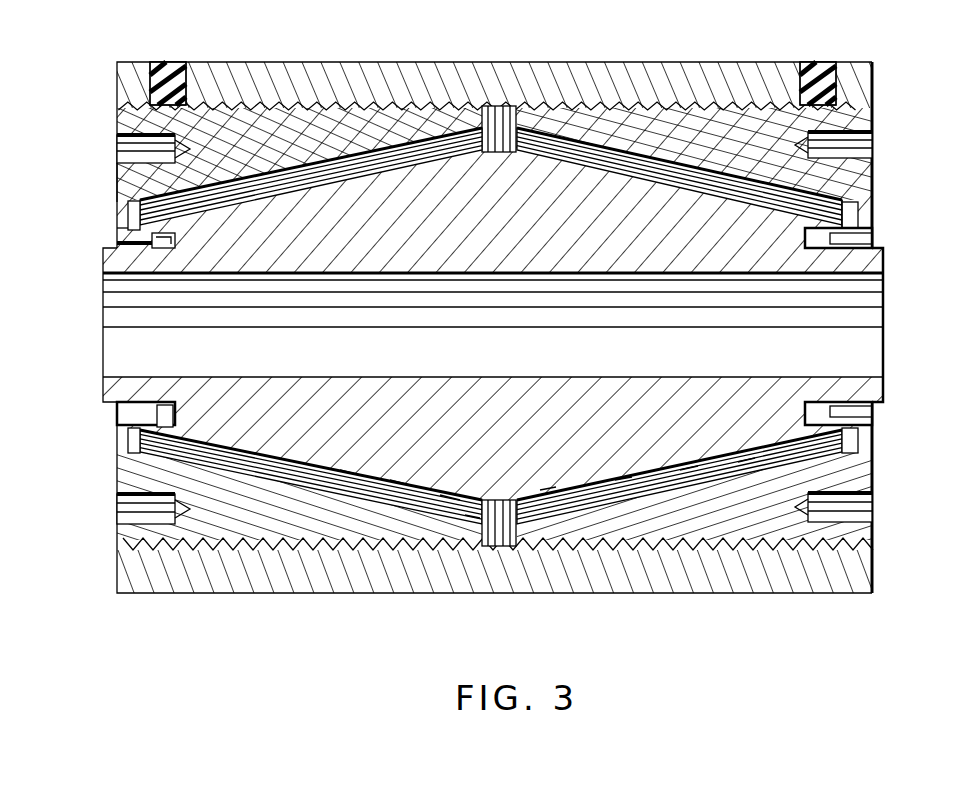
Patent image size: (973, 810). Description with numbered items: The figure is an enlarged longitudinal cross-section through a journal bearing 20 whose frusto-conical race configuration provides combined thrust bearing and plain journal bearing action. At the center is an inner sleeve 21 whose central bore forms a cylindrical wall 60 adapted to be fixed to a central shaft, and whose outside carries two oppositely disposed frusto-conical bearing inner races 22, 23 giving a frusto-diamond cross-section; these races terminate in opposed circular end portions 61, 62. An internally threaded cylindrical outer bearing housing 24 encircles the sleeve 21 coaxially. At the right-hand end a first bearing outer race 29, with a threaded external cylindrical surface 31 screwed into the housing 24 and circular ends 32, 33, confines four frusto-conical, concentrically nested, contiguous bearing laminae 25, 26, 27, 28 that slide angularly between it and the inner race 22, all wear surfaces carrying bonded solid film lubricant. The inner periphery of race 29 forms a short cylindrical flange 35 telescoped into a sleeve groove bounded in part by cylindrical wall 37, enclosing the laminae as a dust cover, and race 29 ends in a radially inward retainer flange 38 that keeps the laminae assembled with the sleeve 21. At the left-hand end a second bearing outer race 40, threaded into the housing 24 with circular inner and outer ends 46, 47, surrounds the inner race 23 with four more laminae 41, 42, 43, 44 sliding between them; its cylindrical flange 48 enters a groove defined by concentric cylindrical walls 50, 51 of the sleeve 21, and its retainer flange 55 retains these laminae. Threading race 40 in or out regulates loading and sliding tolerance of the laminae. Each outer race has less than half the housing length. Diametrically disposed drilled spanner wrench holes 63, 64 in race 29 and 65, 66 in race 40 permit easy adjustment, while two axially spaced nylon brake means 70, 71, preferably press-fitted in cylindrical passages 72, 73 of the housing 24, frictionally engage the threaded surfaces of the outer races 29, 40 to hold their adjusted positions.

The journal bearing 20 is at (597, 62).
The inner sleeve 21 is at (883, 258).
The first bearing inner race 22 is at (855, 440).
The second bearing inner race 23 is at (128, 442).
The outer bearing housing 24 is at (714, 24).
The bearing lamina 25 is at (548, 492).
The bearing lamina 26 is at (624, 485).
The bearing lamina 27 is at (688, 480).
The bearing lamina 28 is at (744, 470).
The first bearing outer race 29 is at (850, 458).
The external cylindrical surface 31 is at (862, 106).
The circular end 32 is at (506, 108).
The circular outer end 33 is at (872, 533).
The cylindrical flange 35 is at (860, 242).
The cylindrical wall 37 is at (836, 232).
The bearing portion retainer flange 38 is at (858, 213).
The second bearing outer race 40 is at (117, 470).
The bearing lamina 41 is at (350, 480).
The bearing lamina 42 is at (400, 490).
The bearing lamina 43 is at (450, 505).
The bearing lamina 44 is at (473, 522).
The circular inner end 46 is at (491, 108).
The circular outer end 47 is at (117, 178).
The cylindrical flange 48 is at (120, 405).
The cylindrical wall 50 is at (110, 249).
The cylindrical wall 51 is at (117, 238).
The bearing portion retainer flange 55 is at (128, 215).
The cylindrical wall 60 is at (858, 274).
The circular end portion 61 is at (830, 420).
The circular end portion 62 is at (163, 420).
The spanner wrench hole 63 is at (872, 505).
The spanner wrench hole 64 is at (872, 137).
The spanner wrench hole 65 is at (117, 505).
The spanner wrench hole 66 is at (117, 143).
The nylon brake means 70 is at (853, 30).
The nylon brake means 71 is at (168, 62).
The cylindrical passage 72 is at (808, 62).
The cylindrical passage 73 is at (185, 62).